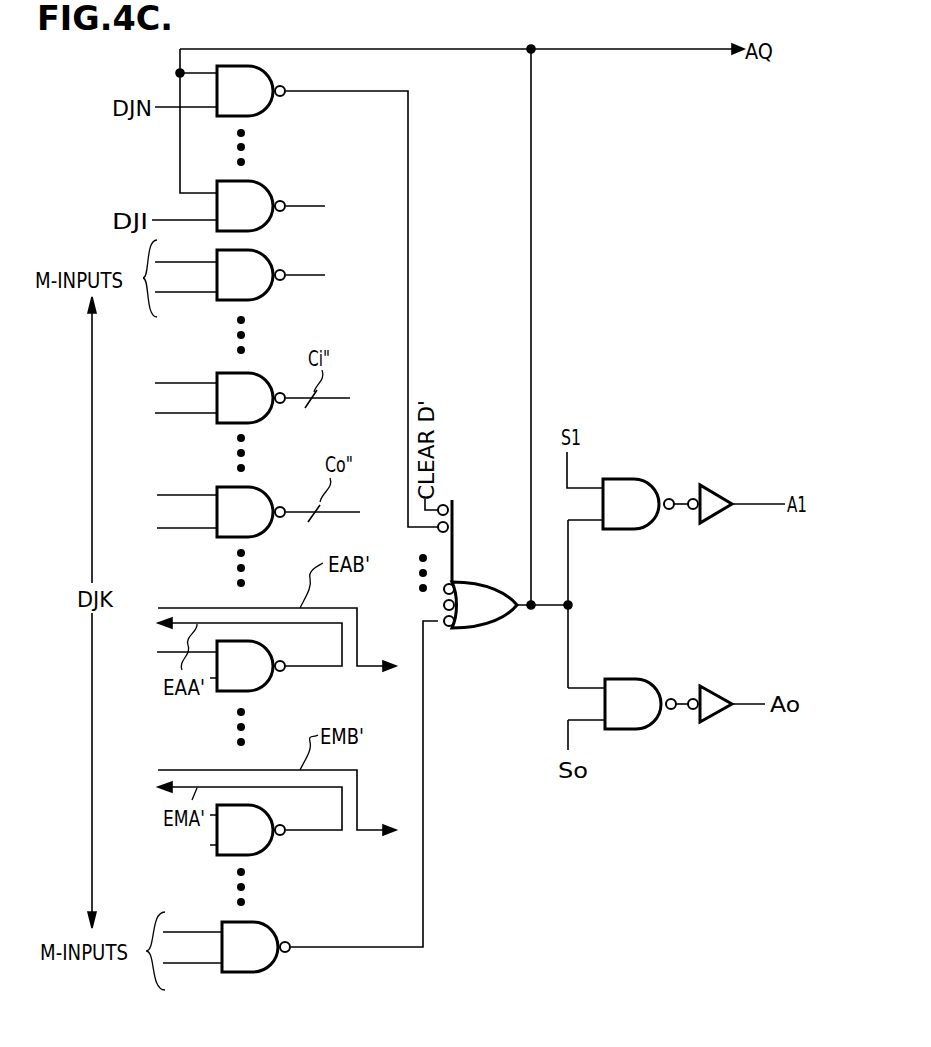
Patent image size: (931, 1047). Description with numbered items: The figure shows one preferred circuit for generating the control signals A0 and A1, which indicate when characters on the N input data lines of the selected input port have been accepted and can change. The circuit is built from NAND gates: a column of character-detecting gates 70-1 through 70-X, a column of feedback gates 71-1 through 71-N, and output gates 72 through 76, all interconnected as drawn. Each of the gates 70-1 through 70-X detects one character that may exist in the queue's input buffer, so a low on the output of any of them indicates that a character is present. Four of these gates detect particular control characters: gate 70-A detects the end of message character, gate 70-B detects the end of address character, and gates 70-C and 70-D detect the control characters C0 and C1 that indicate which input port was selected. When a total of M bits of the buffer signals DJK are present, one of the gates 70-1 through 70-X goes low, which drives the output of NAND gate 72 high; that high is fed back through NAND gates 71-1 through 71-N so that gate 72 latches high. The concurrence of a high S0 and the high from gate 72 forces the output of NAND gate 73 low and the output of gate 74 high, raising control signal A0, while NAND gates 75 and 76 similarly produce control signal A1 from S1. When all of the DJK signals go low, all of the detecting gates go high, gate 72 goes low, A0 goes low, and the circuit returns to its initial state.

The NAND gate 71-N is at (260, 104).
The NAND gate 71-1 is at (258, 219).
The NAND gate 70-X is at (260, 288).
The NAND gate 70-D is at (260, 411).
The NAND gate 70-C is at (260, 525).
The NAND gate 70-B is at (260, 679).
The NAND gate 70-A is at (260, 843).
The NAND gate 70-1 is at (263, 960).
The NAND gate 72 is at (486, 617).
The NAND gate 75 is at (635, 517).
The NAND gate 76 is at (713, 522).
The NAND gate 73 is at (637, 717).
The NAND gate 74 is at (714, 722).